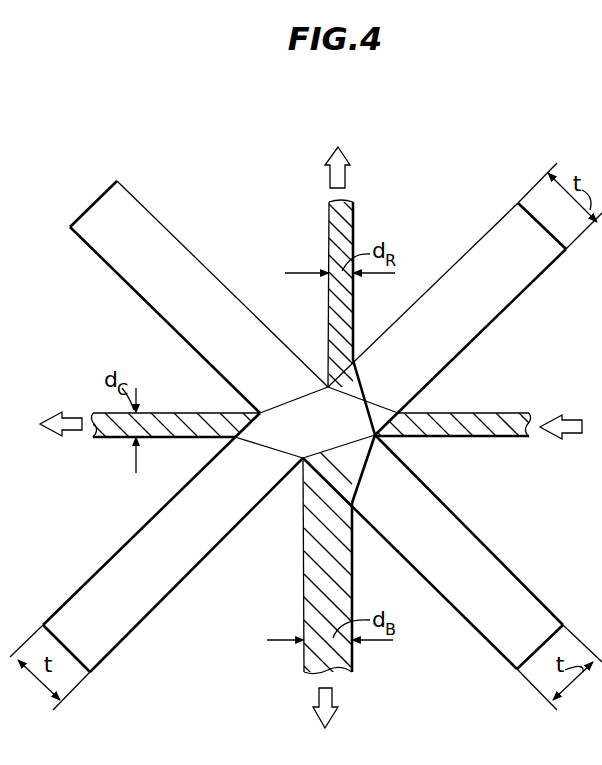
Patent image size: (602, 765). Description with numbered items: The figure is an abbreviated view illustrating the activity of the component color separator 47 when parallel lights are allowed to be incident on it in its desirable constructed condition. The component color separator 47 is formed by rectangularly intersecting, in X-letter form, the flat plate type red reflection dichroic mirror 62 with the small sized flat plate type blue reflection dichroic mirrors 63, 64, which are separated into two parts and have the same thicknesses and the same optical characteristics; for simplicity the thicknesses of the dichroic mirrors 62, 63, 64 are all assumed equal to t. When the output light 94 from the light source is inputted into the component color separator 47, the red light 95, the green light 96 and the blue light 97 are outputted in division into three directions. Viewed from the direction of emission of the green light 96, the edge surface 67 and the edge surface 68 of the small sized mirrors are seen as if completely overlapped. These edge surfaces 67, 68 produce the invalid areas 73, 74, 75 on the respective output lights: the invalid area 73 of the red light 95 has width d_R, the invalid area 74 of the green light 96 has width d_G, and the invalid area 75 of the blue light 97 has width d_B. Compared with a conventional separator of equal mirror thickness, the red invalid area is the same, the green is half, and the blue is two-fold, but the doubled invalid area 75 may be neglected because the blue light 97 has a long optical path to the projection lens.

The component color separator 47 is at (214, 719).
The red reflection dichroic mirror 62 is at (142, 300).
The blue reflection dichroic mirror 63 is at (457, 262).
The blue reflection dichroic mirror 64 is at (108, 560).
The edge surface 67 is at (377, 405).
The edge surface 68 is at (235, 438).
The invalid area of red light 73 is at (343, 268).
The invalid area of green light 74 is at (127, 425).
The invalid area of blue light 75 is at (303, 612).
The output light 94 is at (568, 418).
The red light 95 is at (347, 178).
The green light 96 is at (63, 412).
The blue light 97 is at (337, 705).